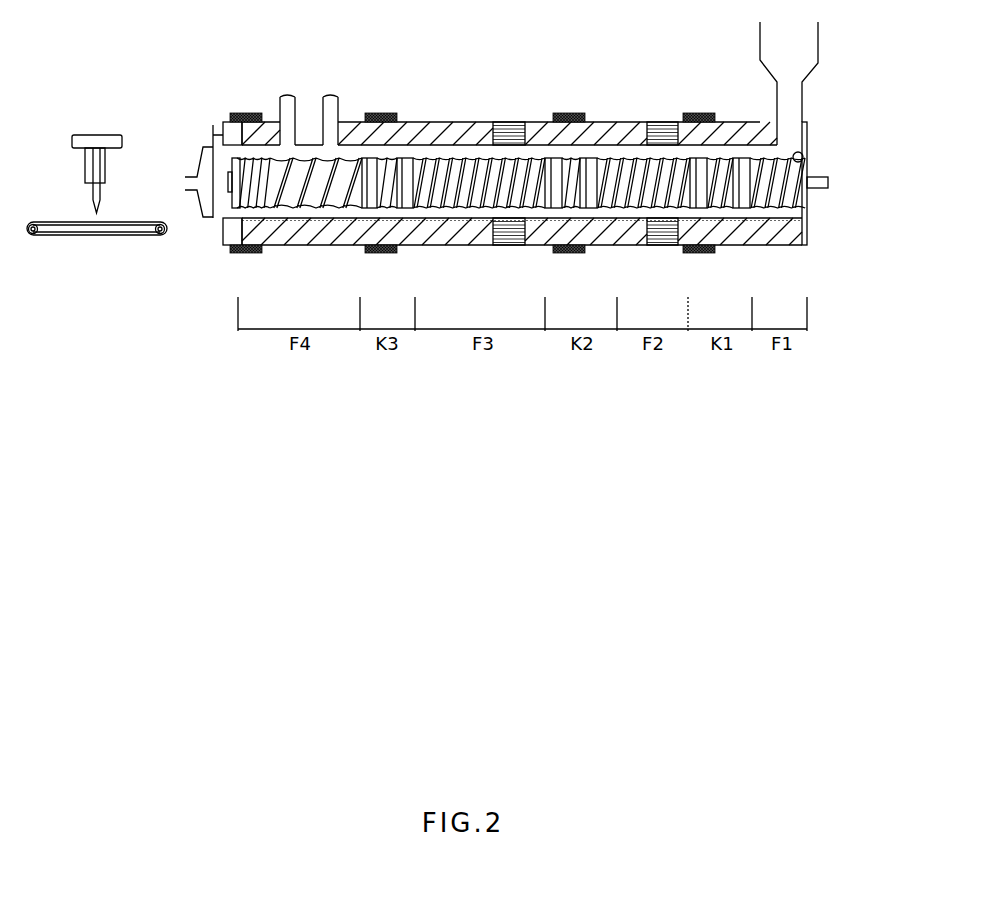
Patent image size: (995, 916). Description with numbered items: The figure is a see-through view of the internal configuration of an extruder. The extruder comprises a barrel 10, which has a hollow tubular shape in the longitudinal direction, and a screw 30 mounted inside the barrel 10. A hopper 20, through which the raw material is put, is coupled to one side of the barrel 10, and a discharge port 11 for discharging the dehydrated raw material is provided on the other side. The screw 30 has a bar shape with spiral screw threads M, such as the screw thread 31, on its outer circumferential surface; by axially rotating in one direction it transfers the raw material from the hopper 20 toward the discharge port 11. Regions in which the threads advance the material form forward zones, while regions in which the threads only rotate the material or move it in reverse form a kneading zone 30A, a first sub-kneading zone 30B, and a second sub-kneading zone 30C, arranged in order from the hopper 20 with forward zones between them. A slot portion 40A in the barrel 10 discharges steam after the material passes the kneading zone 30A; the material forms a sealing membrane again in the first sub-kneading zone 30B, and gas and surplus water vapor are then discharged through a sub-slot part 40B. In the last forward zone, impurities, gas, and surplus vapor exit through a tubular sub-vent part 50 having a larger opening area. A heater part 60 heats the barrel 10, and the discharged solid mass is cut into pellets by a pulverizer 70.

The barrel 10 is at (432, 132).
The discharge port 11 is at (188, 182).
The hopper 20 is at (819, 38).
The screw 30 is at (783, 218).
The kneading zone 30A is at (725, 218).
The first sub-kneading zone 30B is at (573, 218).
The second sub-kneading zone 30C is at (388, 218).
The screw thread 31 is at (803, 194).
The slot portion 40A is at (664, 122).
The sub-slot part 40B is at (509, 122).
The sub-vent part 50 is at (307, 90).
The heater part 60 is at (569, 113).
The pulverizer 70 is at (100, 118).
The screw threads M is at (803, 156).